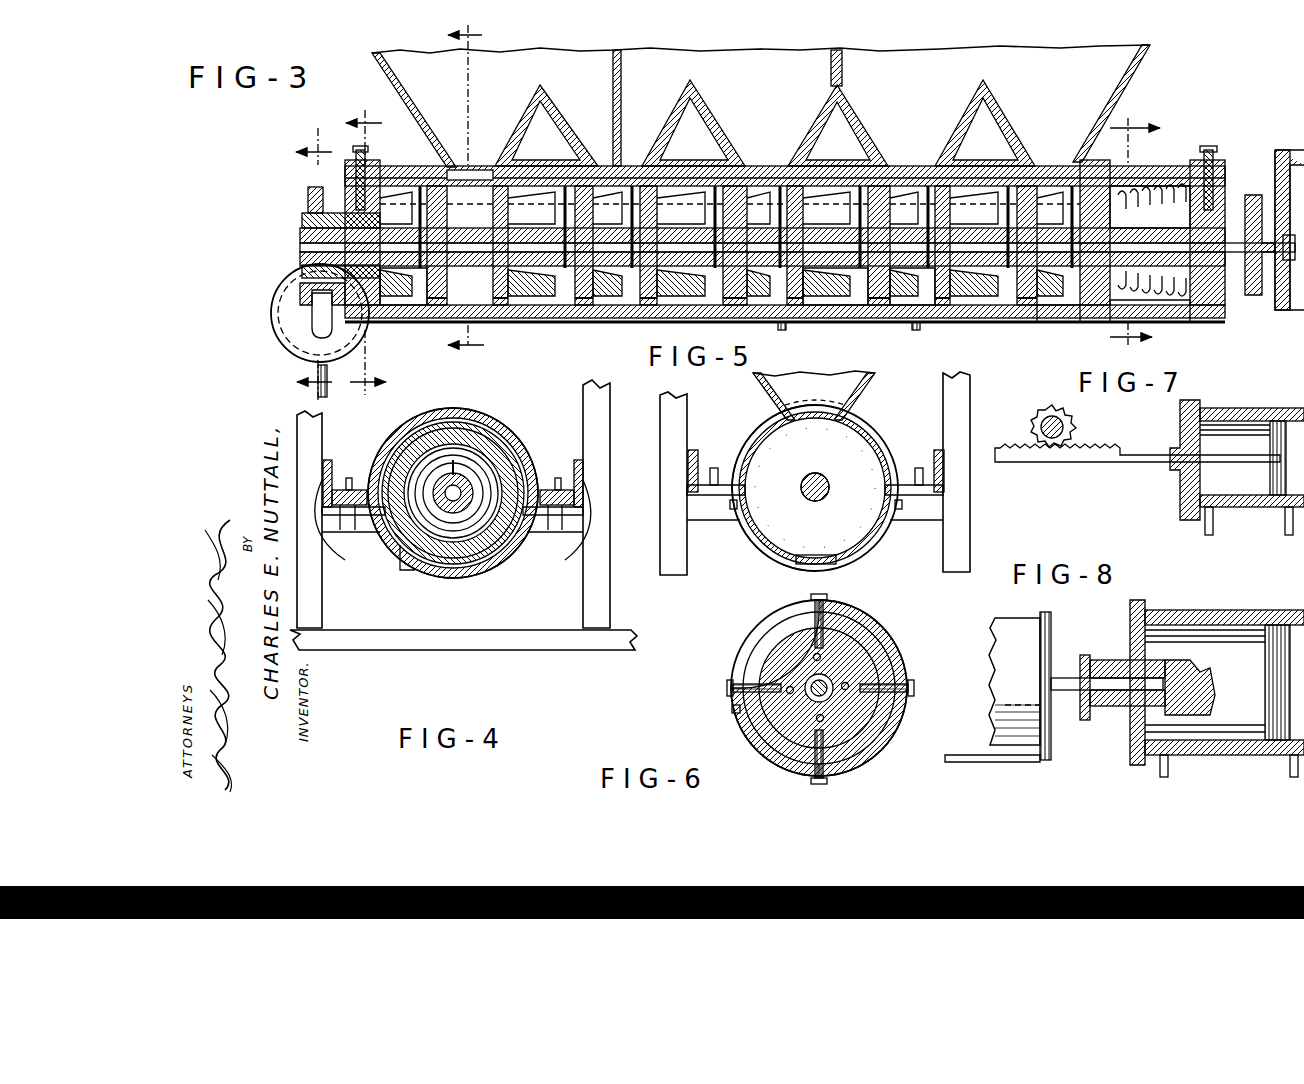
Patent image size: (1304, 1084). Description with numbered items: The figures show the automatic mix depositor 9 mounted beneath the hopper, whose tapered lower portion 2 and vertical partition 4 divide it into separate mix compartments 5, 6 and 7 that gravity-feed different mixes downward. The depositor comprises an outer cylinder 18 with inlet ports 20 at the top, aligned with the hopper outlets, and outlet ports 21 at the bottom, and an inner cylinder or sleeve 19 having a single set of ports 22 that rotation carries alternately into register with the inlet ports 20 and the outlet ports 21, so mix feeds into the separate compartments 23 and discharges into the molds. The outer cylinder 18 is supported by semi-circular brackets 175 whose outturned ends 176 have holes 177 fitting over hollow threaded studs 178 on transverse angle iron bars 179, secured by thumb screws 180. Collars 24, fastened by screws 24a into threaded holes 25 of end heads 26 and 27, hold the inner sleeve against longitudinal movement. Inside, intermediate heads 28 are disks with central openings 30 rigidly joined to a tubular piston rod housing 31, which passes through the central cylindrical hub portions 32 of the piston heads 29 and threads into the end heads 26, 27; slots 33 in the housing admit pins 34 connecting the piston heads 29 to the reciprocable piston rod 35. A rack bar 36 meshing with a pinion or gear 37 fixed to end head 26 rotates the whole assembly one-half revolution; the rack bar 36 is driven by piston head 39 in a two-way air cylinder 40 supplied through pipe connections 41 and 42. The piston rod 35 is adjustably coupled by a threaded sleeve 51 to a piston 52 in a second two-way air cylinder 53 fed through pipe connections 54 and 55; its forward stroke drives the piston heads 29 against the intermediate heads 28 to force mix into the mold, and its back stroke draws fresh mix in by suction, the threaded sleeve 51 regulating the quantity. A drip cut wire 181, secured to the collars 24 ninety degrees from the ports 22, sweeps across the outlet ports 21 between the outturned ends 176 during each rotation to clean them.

In FIG. 3, the tapered lower portion 2 is at (1152, 57).
In FIG. 3, the vertical partition 4 is at (1135, 231).
In FIG. 3, the mix compartment 5 is at (596, 102).
In FIG. 3, the mix compartment 6 is at (805, 106).
In FIG. 3, the mix compartment 7 is at (1094, 114).
In FIG. 3, the mix depositor 9 is at (1046, 324).
In FIG. 3, the outer cylinder 18 is at (722, 140).
In FIG. 4, the outer cylinder 18 is at (462, 575).
In FIG. 3, the inner cylinder or sleeve 19 is at (1066, 322).
In FIG. 5, the inner cylinder or sleeve 19 is at (815, 488).
In FIG. 6, the inner cylinder or sleeve 19 is at (880, 632).
In FIG. 4, the inner cylinder or sleeve 19 is at (500, 560).
In FIG. 3, the inlet ports 20 is at (478, 166).
In FIG. 5, the inlet ports 20 is at (805, 412).
In FIG. 3, the outlet ports 21 is at (795, 328).
In FIG. 5, the outlet ports 21 is at (803, 564).
In FIG. 3, the ports 22 is at (458, 166).
In FIG. 5, the ports 22 is at (822, 425).
In FIG. 3, the compartments 23 is at (730, 208).
In FIG. 5, the compartments 23 is at (775, 500).
In FIG. 3, the collars 24 is at (345, 171).
In FIG. 3, the screws 24a is at (365, 152).
In FIG. 6, the screws 24a is at (827, 598).
In FIG. 8, the screws 24a is at (995, 686).
In FIG. 3, the threaded holes 25 is at (308, 196).
In FIG. 3, the end head 26 is at (302, 218).
In FIG. 3, the end head 27 is at (1225, 215).
In FIG. 3, the intermediate heads 28 is at (1010, 322).
In FIG. 3, the piston heads 29 is at (912, 286).
In FIG. 3, the central openings 30 is at (721, 248).
In FIG. 3, the tubular piston rod housing 31 is at (768, 234).
In FIG. 5, the tubular piston rod housing 31 is at (830, 484).
In FIG. 4, the tubular piston rod housing 31 is at (468, 430).
In FIG. 3, the central cylindrical hub portions 32 is at (732, 279).
In FIG. 3, the slots 33 is at (603, 318).
In FIG. 4, the slots 33 is at (450, 440).
In FIG. 3, the pins 34 is at (800, 272).
In FIG. 3, the piston rod 35 is at (300, 247).
In FIG. 5, the piston rod 35 is at (822, 498).
In FIG. 6, the piston rod 35 is at (895, 660).
In FIG. 8, the piston rod 35 is at (1064, 676).
In FIG. 3, the rack bar 36 is at (312, 318).
In FIG. 7, the rack bar 36 is at (1095, 462).
In FIG. 3, the pinion or gear 37 is at (312, 294).
In FIG. 7, the pinion or gear 37 is at (1072, 424).
In FIG. 7, the piston head 39 is at (1268, 472).
In FIG. 3, the two-way air cylinder 40 is at (283, 335).
In FIG. 7, the two-way air cylinder 40 is at (1232, 410).
In FIG. 7, the pipe connection 41 is at (1215, 528).
In FIG. 7, the pipe connection 42 is at (1288, 536).
In FIG. 3, the threaded sleeve 51 is at (1250, 268).
In FIG. 8, the threaded sleeve 51 is at (1086, 720).
In FIG. 8, the piston 52 is at (1266, 715).
In FIG. 8, the two-way air cylinder 53 is at (1215, 610).
In FIG. 8, the pipe connection 54 is at (1168, 766).
In FIG. 8, the pipe connection 55 is at (1290, 762).
In FIG. 4, the brackets 175 is at (492, 420).
In FIG. 4, the outturned ends 176 is at (612, 506).
In FIG. 4, the holes 177 is at (350, 478).
In FIG. 4, the studs 178 is at (343, 532).
In FIG. 5, the angle iron bars 179 is at (693, 450).
In FIG. 4, the angle iron bars 179 is at (330, 460).
In FIG. 5, the thumb screws 180 is at (708, 522).
In FIG. 4, the thumb screws 180 is at (345, 562).
In FIG. 5, the drip cut wire 181 is at (734, 510).
In FIG. 6, the drip cut wire 181 is at (732, 712).
In FIG. 4, the drip cut wire 181 is at (402, 572).
In FIG. 8, the drip cut wire 181 is at (980, 762).